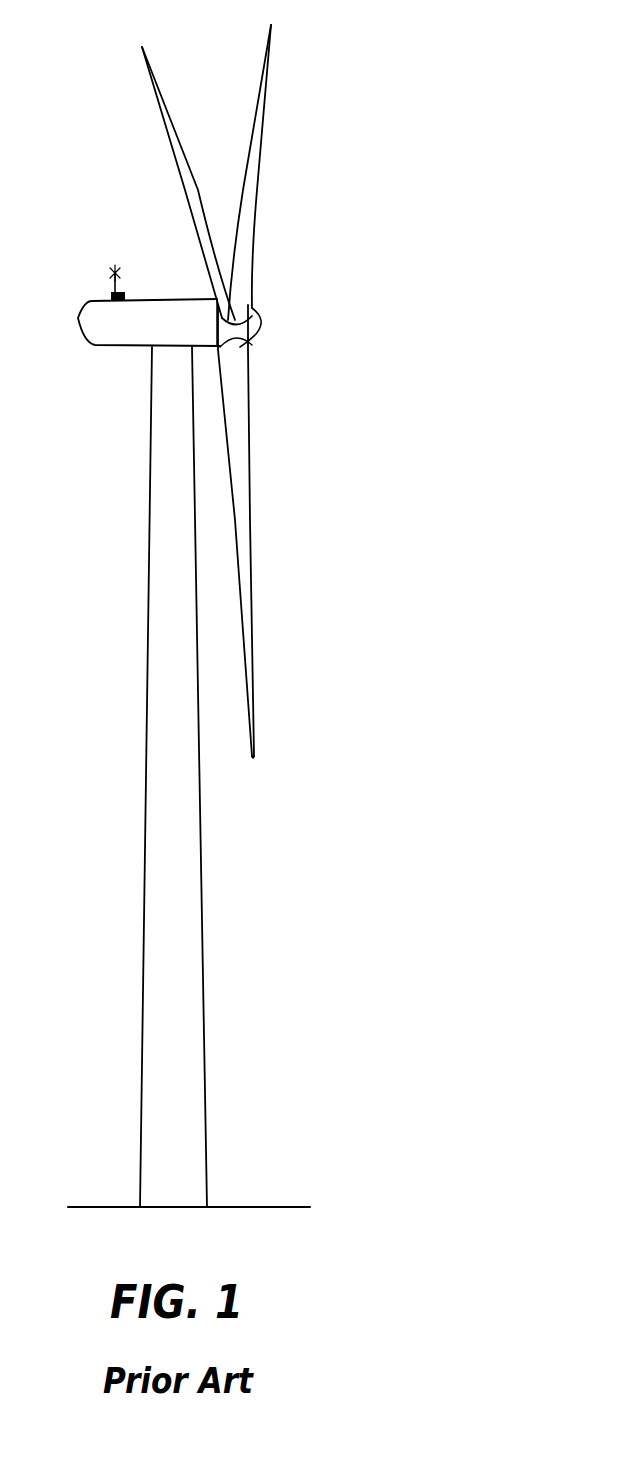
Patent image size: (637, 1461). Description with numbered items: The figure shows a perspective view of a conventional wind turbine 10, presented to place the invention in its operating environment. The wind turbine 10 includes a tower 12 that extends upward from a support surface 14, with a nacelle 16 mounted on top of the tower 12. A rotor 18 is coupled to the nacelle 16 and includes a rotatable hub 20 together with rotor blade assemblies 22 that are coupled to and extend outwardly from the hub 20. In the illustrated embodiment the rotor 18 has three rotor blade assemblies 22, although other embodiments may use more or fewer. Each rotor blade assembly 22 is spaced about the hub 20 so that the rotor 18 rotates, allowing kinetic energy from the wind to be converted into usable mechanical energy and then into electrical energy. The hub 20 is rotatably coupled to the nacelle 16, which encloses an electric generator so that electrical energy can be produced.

The wind turbine 10 is at (430, 114).
The tower 12 is at (180, 835).
The support surface 14 is at (122, 1207).
The nacelle 16 is at (118, 330).
The rotor 18 is at (268, 286).
The rotatable hub 20 is at (258, 318).
The rotor blade assembly 22 is at (172, 125).